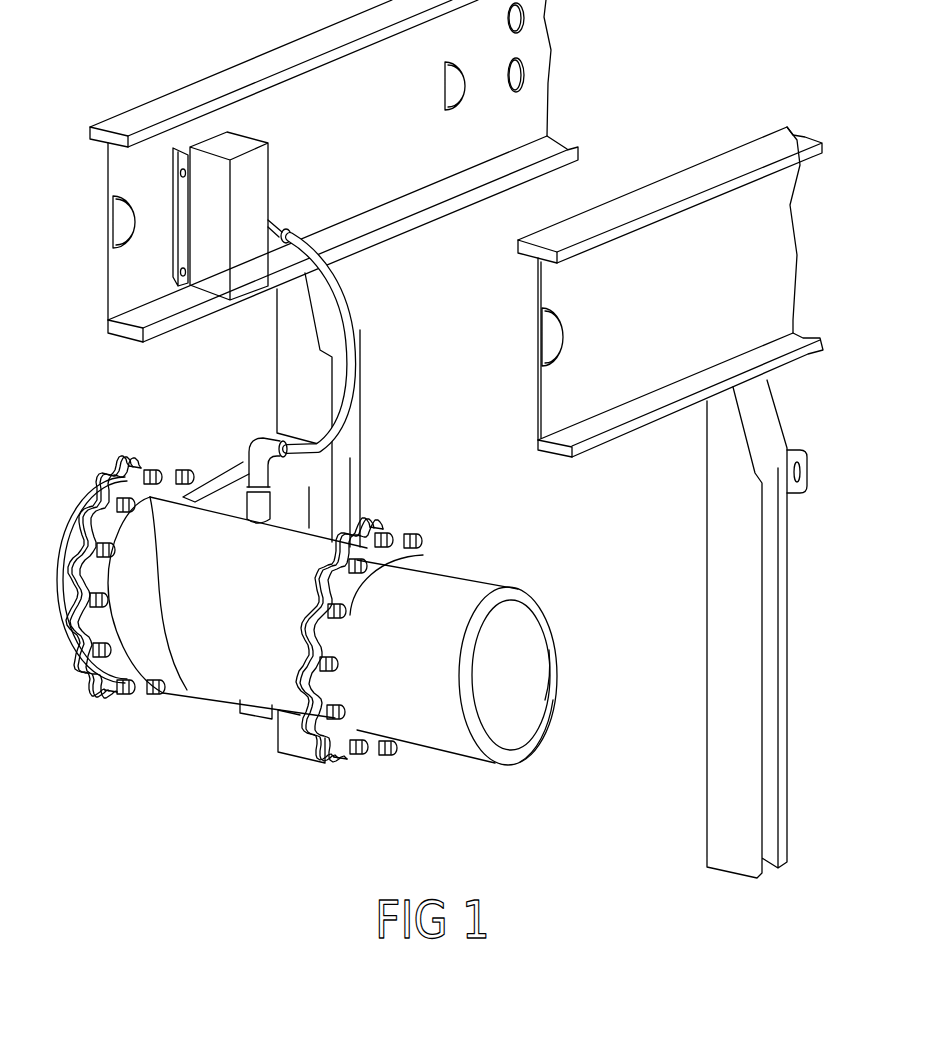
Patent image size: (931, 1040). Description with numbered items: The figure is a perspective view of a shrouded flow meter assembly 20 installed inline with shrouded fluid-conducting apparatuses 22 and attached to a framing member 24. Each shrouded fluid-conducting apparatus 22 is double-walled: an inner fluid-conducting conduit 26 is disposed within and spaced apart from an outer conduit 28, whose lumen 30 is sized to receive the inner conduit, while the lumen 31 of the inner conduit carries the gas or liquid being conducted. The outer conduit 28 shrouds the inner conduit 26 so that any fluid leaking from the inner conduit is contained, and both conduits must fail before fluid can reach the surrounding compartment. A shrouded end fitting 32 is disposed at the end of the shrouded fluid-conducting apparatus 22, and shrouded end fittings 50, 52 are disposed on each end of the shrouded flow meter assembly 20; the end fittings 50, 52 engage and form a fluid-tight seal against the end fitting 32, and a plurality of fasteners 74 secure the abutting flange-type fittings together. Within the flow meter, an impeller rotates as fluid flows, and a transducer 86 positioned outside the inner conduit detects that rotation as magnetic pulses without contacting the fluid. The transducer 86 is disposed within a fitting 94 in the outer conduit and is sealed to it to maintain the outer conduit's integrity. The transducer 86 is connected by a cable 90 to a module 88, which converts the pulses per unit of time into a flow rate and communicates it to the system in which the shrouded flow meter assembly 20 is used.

The shrouded flow meter assembly 20 is at (372, 498).
The shrouded fluid-conducting apparatus 22 is at (320, 639).
The framing member 24 is at (292, 362).
The inner fluid-conducting conduit 26 is at (535, 667).
The outer conduit 28 is at (512, 762).
The lumen 30 is at (530, 731).
The lumen 31 is at (538, 682).
The shrouded end fitting 32 is at (76, 556).
The shrouded end fitting 50 is at (107, 665).
The shrouded end fitting 52 is at (310, 717).
The fastener 74 is at (410, 565).
The transducer 86 is at (250, 470).
The module 88 is at (257, 203).
The cable 90 is at (334, 306).
The fitting 94 is at (267, 503).